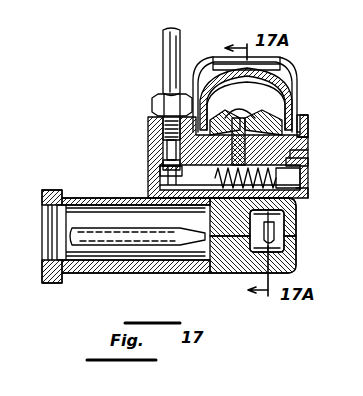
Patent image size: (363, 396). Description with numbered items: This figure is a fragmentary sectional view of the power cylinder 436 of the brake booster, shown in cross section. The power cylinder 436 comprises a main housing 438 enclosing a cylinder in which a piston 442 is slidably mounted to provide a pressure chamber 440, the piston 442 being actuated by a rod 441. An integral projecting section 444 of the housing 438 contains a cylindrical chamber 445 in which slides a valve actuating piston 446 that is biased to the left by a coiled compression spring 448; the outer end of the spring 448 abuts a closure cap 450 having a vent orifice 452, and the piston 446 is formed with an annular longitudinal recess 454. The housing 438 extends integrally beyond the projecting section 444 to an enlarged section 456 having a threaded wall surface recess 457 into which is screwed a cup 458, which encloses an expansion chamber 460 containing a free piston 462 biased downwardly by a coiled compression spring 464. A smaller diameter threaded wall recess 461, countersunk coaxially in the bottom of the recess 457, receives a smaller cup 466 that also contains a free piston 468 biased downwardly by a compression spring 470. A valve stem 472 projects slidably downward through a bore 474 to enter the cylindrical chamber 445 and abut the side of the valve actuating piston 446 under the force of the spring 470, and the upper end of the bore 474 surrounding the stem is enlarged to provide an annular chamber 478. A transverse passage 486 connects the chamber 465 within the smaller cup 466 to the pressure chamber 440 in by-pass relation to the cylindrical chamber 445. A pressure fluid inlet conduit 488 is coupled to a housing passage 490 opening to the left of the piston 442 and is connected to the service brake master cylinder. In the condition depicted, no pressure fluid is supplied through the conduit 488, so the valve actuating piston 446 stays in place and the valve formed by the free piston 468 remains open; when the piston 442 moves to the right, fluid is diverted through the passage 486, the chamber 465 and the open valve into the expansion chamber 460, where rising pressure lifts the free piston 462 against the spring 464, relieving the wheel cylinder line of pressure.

The power cylinder 436 is at (289, 227).
The main housing 438 is at (112, 268).
The pressure chamber 440 is at (244, 236).
The rod 441 is at (100, 242).
The piston 442 is at (188, 274).
The projecting section 444 is at (150, 182).
The cylindrical chamber 445 is at (205, 221).
The valve actuating piston 446 is at (155, 206).
The coiled compression spring 448 is at (305, 162).
The closure cap 450 is at (302, 178).
The vent orifice 452 is at (306, 193).
The annular longitudinal recess 454 is at (163, 162).
The enlarged section 456 is at (160, 127).
The threaded wall surface recess 457 is at (305, 118).
The cup 458 is at (290, 86).
The expansion chamber 460 is at (292, 108).
The smaller diameter threaded wall recess 461 is at (302, 136).
The free piston 462 is at (285, 72).
The coiled compression spring 464 is at (220, 64).
The chamber 465 is at (230, 164).
The smaller cup 466 is at (263, 132).
The free piston 468 is at (222, 117).
The compression spring 470 is at (243, 112).
The valve stem 472 is at (160, 172).
The bore 474 is at (290, 168).
The annular chamber 478 is at (300, 150).
The transverse passage 486 is at (275, 237).
The pressure fluid inlet conduit 488 is at (163, 42).
The housing passage 490 is at (165, 148).